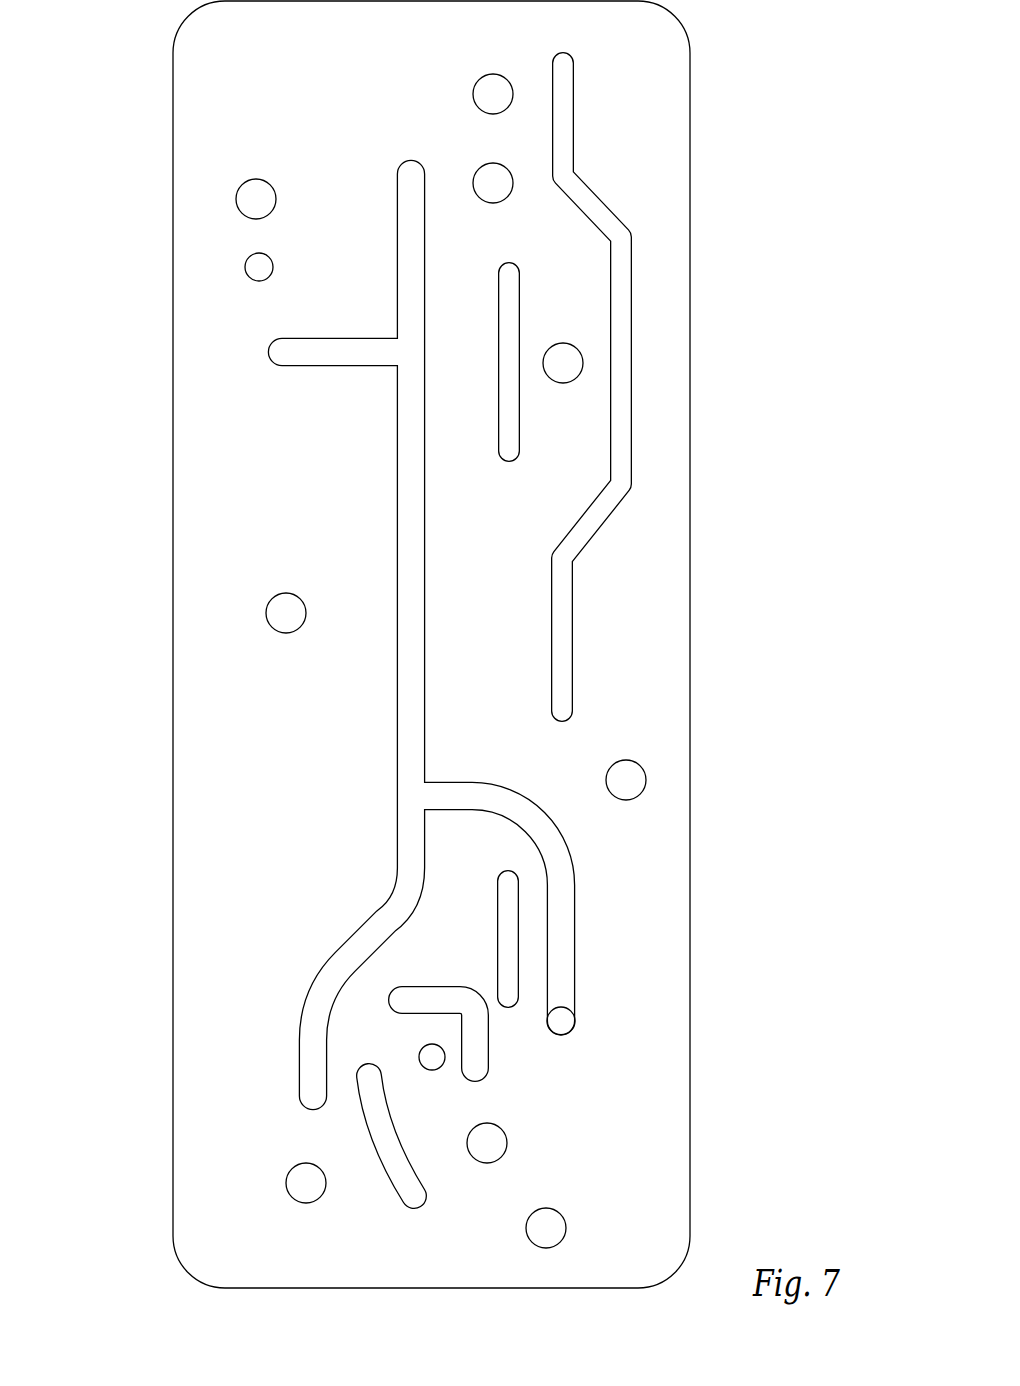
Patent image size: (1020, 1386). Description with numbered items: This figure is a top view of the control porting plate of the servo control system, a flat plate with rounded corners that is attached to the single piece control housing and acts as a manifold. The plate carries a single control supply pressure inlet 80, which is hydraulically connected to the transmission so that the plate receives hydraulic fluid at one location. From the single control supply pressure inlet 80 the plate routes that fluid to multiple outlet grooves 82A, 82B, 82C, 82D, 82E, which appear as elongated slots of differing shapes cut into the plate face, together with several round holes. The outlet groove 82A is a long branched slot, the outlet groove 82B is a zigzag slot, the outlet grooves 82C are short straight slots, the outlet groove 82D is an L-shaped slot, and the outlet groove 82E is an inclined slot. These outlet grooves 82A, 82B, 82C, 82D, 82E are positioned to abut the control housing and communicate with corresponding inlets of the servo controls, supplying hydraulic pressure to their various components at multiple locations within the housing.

The single control supply pressure inlet 80 is at (112, 312).
The outlet groove 82A is at (425, 547).
The outlet groove 82B is at (611, 423).
The outlet groove 82C is at (498, 327).
The outlet groove 82D is at (462, 1047).
The outlet groove 82E is at (400, 1137).